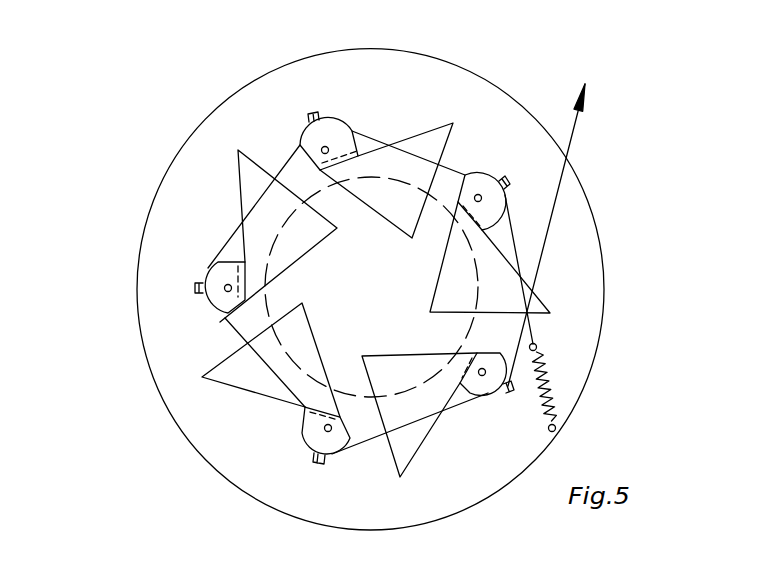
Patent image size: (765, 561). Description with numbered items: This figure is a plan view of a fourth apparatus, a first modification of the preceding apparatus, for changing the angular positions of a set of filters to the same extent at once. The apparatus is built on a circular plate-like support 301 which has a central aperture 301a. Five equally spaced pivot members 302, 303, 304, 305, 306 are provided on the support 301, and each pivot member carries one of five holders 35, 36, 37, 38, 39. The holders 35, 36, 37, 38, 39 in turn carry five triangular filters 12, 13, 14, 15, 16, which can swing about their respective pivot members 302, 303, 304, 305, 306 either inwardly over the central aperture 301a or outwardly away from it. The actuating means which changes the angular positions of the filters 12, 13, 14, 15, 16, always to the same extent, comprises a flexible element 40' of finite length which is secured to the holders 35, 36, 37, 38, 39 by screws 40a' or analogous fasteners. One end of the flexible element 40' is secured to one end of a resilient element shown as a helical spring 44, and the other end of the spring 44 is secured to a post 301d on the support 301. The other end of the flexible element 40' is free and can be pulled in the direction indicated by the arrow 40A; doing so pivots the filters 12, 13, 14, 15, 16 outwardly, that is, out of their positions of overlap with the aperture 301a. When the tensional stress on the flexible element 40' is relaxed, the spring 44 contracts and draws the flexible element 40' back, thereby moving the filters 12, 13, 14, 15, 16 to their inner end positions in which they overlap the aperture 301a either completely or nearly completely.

The triangular filter 12 is at (440, 127).
The triangular filter 13 is at (536, 308).
The triangular filter 14 is at (413, 453).
The triangular filter 15 is at (280, 388).
The triangular filter 16 is at (245, 175).
The holder 35 is at (506, 226).
The holder 36 is at (498, 348).
The holder 37 is at (315, 436).
The holder 38 is at (212, 270).
The holder 39 is at (306, 133).
The circular plate-like support 301 is at (152, 352).
The central aperture 301a is at (272, 297).
The post 301d is at (555, 426).
The pivot member 302 is at (478, 194).
The pivot member 303 is at (483, 376).
The pivot member 304 is at (331, 437).
The pivot member 305 is at (222, 302).
The pivot member 306 is at (325, 147).
The flexible element 40' is at (570, 235).
The screw 40a' is at (536, 122).
The arrow 40A is at (586, 106).
The helical spring 44 is at (547, 377).